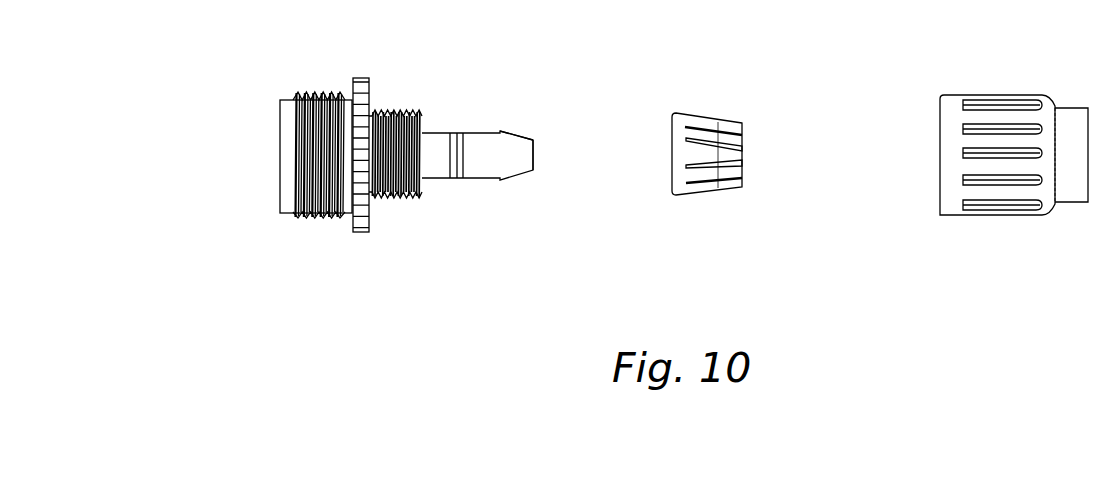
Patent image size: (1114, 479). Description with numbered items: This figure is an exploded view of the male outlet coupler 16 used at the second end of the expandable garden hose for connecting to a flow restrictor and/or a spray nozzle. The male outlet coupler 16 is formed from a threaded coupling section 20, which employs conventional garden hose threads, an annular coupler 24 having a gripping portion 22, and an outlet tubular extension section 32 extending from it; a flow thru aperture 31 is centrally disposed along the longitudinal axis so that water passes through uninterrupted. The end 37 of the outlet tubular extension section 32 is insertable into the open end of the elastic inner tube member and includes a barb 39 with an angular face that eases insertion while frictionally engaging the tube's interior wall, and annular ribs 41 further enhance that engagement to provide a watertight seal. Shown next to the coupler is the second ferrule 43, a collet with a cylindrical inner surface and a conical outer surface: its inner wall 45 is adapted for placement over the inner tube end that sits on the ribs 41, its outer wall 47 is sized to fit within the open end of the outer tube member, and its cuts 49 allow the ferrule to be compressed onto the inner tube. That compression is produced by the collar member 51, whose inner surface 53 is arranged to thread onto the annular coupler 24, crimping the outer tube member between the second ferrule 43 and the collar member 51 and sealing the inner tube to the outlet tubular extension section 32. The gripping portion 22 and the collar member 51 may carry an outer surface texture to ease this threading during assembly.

The male outlet coupler 16 is at (203, 158).
The threaded coupling section 20 is at (303, 222).
The gripping portion 22 is at (363, 78).
The annular coupler 24 is at (395, 198).
The flow thru aperture 31 is at (280, 145).
The outlet tubular extension section 32 is at (482, 179).
The end 37 is at (533, 140).
The barb 39 is at (510, 130).
The annular ribs 41 is at (450, 179).
The second ferrule 43 is at (682, 198).
The inner wall 45 is at (672, 149).
The outer wall 47 is at (723, 188).
The cuts 49 is at (707, 140).
The collar member 51 is at (983, 220).
The inner surface 53 is at (940, 155).